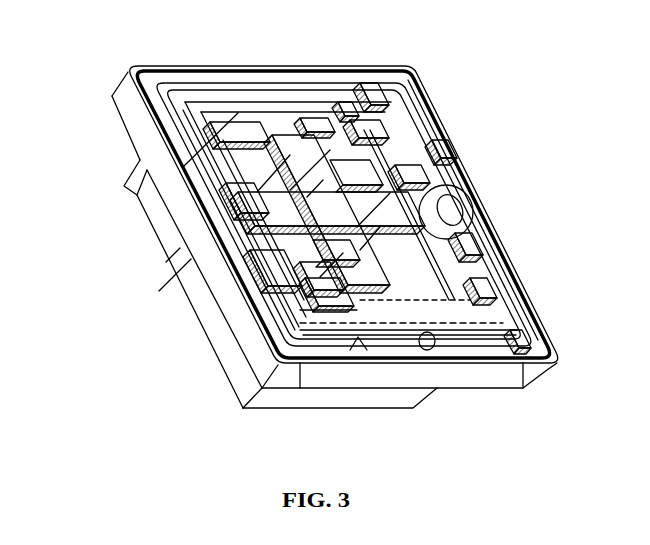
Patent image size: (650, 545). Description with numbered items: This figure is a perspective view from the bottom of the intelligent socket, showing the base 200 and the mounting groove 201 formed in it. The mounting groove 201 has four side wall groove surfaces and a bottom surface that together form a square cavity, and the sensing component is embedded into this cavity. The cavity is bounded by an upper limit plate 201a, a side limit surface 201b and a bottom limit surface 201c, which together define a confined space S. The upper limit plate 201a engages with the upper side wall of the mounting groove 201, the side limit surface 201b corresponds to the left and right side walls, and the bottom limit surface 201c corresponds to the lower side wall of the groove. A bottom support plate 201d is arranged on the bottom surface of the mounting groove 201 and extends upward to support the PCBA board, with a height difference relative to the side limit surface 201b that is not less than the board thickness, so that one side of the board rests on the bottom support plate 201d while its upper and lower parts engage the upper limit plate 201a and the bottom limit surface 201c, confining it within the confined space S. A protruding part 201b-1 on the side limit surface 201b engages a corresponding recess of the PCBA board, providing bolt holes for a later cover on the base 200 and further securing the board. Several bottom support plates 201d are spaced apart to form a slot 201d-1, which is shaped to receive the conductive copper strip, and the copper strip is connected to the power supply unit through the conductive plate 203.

The base 200 is at (147, 195).
The mounting groove 201 is at (480, 363).
The upper limit plate 201a is at (220, 64).
The side limit surface 201b is at (510, 304).
The protruding part 201b-1 is at (490, 208).
The bottom limit surface 201c is at (380, 368).
The bottom support plate 201d is at (450, 153).
The slot 201d-1 is at (184, 249).
The conductive plate 203 is at (281, 368).
The confined space S is at (341, 63).